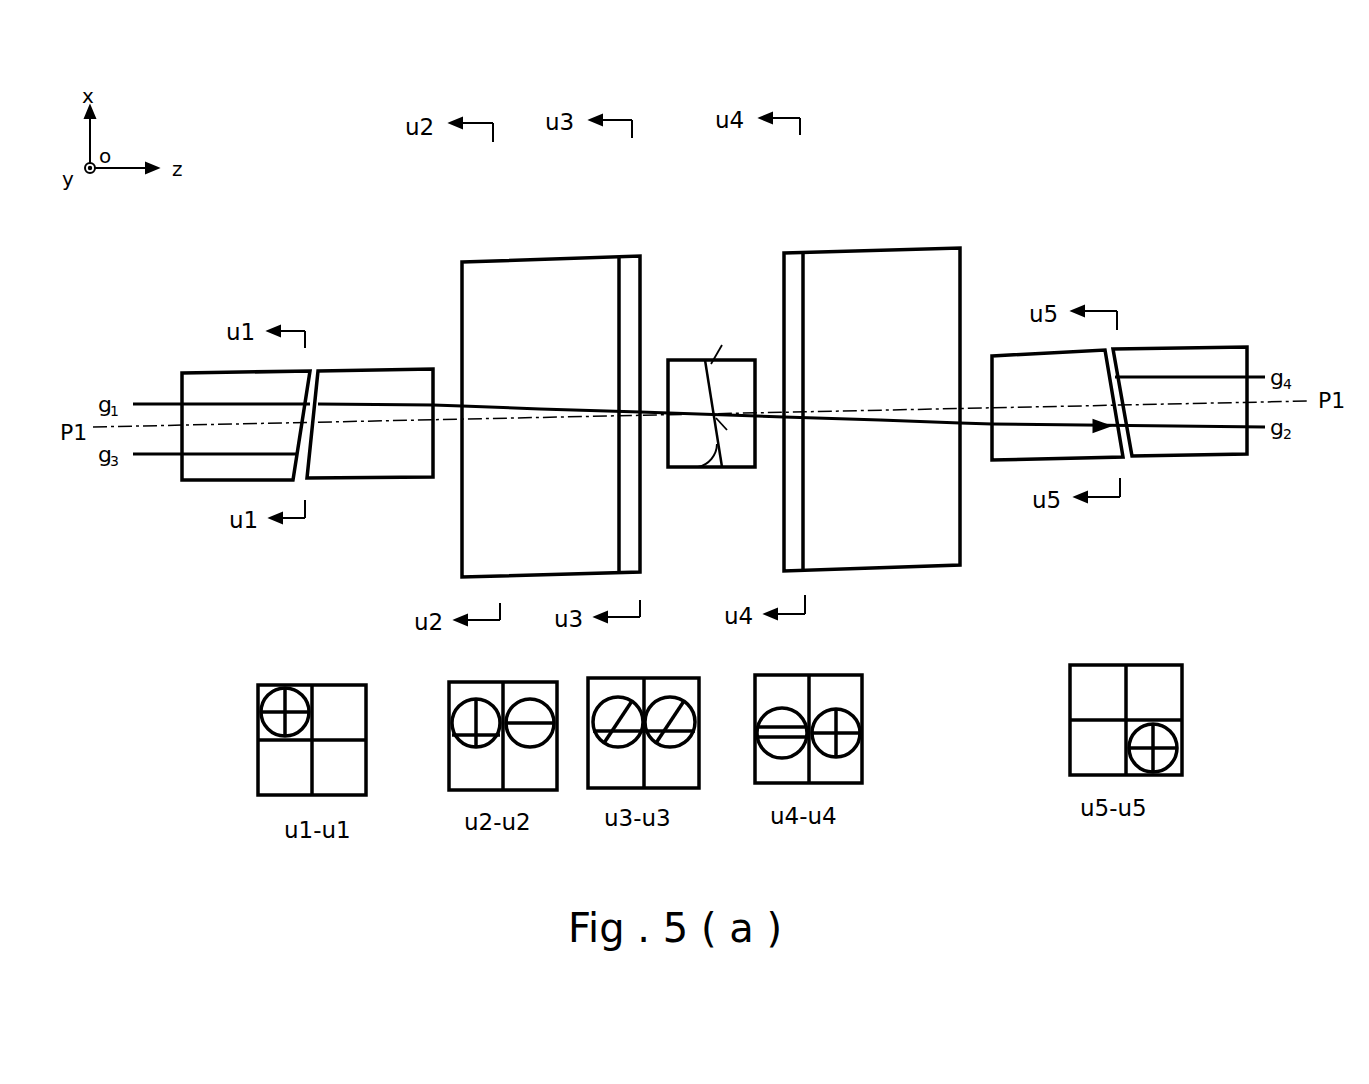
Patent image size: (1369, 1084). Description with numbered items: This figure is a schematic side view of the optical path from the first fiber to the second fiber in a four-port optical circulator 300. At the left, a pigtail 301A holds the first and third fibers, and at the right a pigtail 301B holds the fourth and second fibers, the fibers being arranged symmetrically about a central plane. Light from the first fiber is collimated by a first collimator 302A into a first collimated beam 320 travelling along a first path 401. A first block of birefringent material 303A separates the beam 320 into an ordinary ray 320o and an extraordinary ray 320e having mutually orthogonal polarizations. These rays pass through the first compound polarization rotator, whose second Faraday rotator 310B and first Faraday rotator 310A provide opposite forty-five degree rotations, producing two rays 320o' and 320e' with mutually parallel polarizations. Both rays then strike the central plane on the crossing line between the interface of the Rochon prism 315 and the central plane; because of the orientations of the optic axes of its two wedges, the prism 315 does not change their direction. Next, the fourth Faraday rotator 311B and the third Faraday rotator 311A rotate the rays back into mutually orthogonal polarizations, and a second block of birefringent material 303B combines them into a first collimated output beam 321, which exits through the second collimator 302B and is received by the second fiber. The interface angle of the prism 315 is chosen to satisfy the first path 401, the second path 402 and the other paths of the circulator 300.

The four-port optical circulator 300 is at (1147, 148).
The pigtail 301A is at (210, 372).
The pigtail 301B is at (1172, 348).
The first collimator 302A is at (383, 370).
The second collimator 302B is at (1003, 352).
The first block of birefringent material 303A is at (513, 258).
The second block of birefringent material 303B is at (915, 250).
The first Faraday rotator 310A is at (674, 370).
The second Faraday rotator 310B is at (640, 270).
The third Faraday rotator 311A is at (831, 367).
The fourth Faraday rotator 311B is at (778, 262).
The Rochon prism 315 is at (683, 468).
The first collimated beam 320 is at (448, 402).
The ordinary ray 320o is at (562, 445).
The extraordinary ray 320e is at (562, 445).
The ray having parallel polarization 320o' is at (718, 350).
The ray having parallel polarization 320e' is at (718, 350).
The first collimated output beam 321 is at (976, 427).
The first path 401 is at (520, 406).
The second path 402 is at (903, 423).